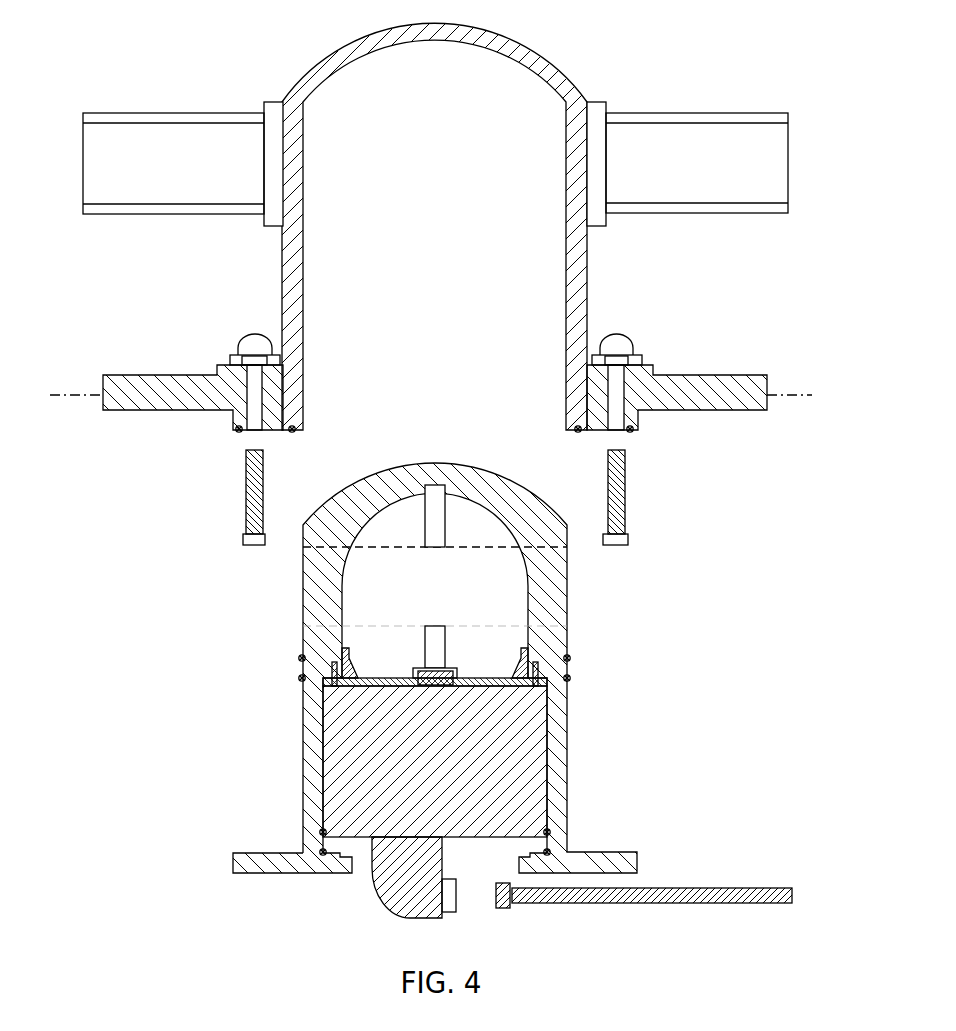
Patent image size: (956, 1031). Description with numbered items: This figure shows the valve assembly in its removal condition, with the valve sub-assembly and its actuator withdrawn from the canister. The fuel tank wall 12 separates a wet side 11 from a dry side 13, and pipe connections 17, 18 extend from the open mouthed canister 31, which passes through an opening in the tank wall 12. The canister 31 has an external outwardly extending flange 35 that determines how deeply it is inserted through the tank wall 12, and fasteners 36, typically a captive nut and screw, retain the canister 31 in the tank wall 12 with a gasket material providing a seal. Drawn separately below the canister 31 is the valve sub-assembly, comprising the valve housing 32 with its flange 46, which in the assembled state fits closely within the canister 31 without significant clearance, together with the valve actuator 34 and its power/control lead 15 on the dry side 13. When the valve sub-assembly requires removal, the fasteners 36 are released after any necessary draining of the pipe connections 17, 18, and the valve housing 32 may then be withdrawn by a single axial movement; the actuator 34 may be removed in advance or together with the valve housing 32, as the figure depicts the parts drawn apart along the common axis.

The wet side 11 is at (697, 311).
The fuel tank wall 12 is at (725, 398).
The dry side 13 is at (180, 713).
The power/control lead 15 is at (670, 887).
The pipe connection 17 is at (181, 140).
The pipe connection 18 is at (700, 140).
The open mouthed canister 31 is at (582, 292).
The valve housing 32 is at (558, 772).
The valve actuator 34 is at (350, 770).
The flange 35 is at (229, 418).
The fasteners 36 is at (245, 492).
The flange 46 is at (255, 877).